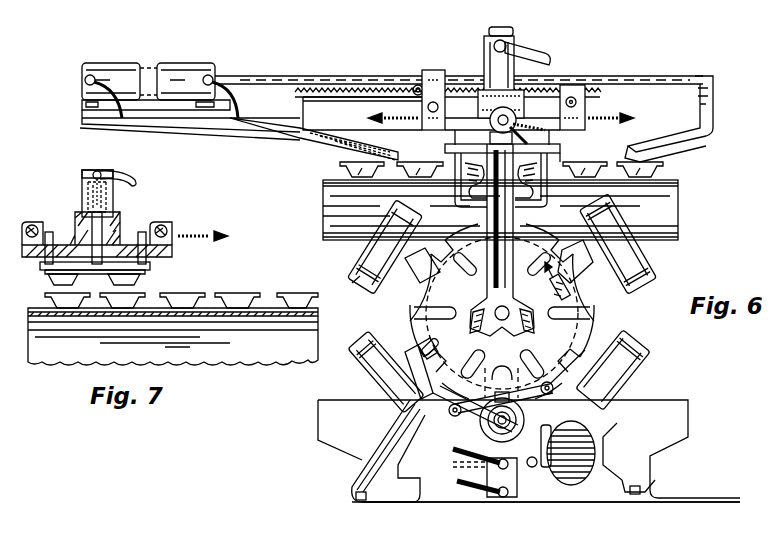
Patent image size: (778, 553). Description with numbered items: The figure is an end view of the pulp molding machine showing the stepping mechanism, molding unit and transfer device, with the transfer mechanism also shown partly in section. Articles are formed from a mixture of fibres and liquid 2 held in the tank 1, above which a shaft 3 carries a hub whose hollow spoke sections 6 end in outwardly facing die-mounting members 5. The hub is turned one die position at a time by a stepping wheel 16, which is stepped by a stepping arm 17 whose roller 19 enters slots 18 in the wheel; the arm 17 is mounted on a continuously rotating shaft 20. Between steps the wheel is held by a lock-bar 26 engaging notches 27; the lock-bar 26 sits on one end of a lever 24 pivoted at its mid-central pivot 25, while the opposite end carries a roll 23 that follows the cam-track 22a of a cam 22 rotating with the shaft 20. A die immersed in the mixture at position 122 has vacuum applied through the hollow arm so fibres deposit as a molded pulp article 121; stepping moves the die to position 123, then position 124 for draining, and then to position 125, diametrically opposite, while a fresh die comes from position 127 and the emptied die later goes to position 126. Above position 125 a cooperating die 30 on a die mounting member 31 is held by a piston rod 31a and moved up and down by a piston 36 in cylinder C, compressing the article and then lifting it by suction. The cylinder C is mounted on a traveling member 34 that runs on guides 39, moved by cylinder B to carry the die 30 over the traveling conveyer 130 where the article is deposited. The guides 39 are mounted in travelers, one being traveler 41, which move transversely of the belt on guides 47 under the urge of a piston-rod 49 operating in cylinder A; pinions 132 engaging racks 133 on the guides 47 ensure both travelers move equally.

In FIG. 6, the tank 1 is at (670, 426).
In FIG. 6, the mixture of fibres and liquid 2 is at (571, 460).
In FIG. 6, the shaft 3 is at (502, 320).
In FIG. 6, the die-mounting member 5 is at (527, 188).
In FIG. 6, the hollow spoke section 6 is at (392, 278).
In FIG. 6, the stepping wheel 16 is at (517, 311).
In FIG. 6, the stepping arm 17 is at (540, 409).
In FIG. 6, the slot 18 is at (414, 313).
In FIG. 6, the roller 19 is at (555, 389).
In FIG. 6, the shaft 20 is at (543, 445).
In FIG. 6, the cam 22 is at (475, 422).
In FIG. 6, the cam-track 22a is at (502, 397).
In FIG. 6, the roll 23 is at (485, 466).
In FIG. 6, the lever 24 is at (449, 410).
In FIG. 6, the pivot 25 is at (450, 418).
In FIG. 6, the lock-bar 26 is at (446, 346).
In FIG. 6, the notch 27 is at (476, 342).
In FIG. 6, the cooperating die 30 is at (448, 148).
In FIG. 7, the cooperating die 30 is at (142, 276).
In FIG. 6, the die mounting member 31 is at (448, 147).
In FIG. 7, the die mounting member 31 is at (150, 266).
In FIG. 7, the piston rod 31a is at (100, 238).
In FIG. 6, the traveling member 34 is at (480, 105).
In FIG. 7, the traveling member 34 is at (64, 242).
In FIG. 7, the piston 36 is at (84, 180).
In FIG. 6, the guide 39 is at (578, 88).
In FIG. 7, the guide 39 is at (170, 228).
In FIG. 6, the traveler 41 is at (434, 72).
In FIG. 6, the guide 47 is at (658, 90).
In FIG. 6, the piston-rod 49 is at (258, 78).
In FIG. 6, the molded pulp article 121 is at (340, 168).
In FIG. 7, the molded pulp article 121 is at (195, 292).
In FIG. 6, the position 122 is at (540, 503).
In FIG. 6, the position 123 is at (628, 372).
In FIG. 6, the position 124 is at (628, 260).
In FIG. 6, the position 125 is at (565, 160).
In FIG. 6, the position 126 is at (349, 295).
In FIG. 6, the position 127 is at (380, 372).
In FIG. 6, the traveling conveyer 130 is at (657, 209).
In FIG. 7, the traveling conveyer 130 is at (263, 305).
In FIG. 6, the pinion 132 is at (395, 84).
In FIG. 6, the rack 133 is at (345, 94).
In FIG. 6, the cylinder A is at (118, 70).
In FIG. 6, the cylinder B is at (493, 124).
In FIG. 6, the cylinder C is at (488, 66).
In FIG. 7, the cylinder C is at (82, 204).